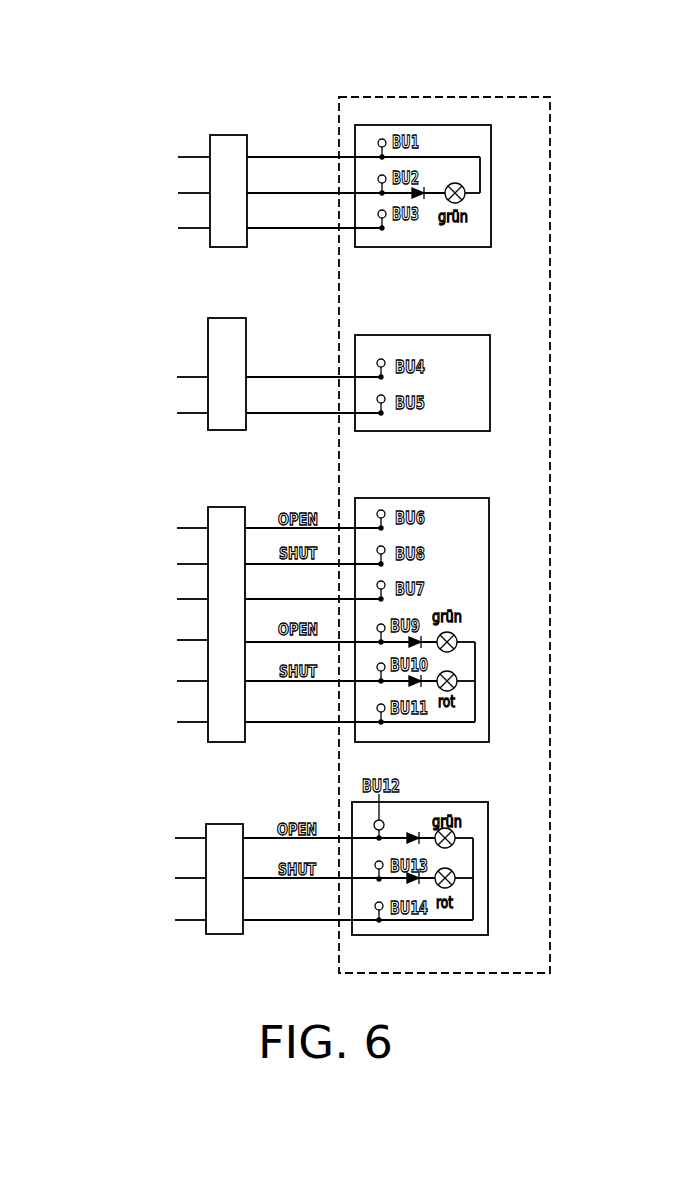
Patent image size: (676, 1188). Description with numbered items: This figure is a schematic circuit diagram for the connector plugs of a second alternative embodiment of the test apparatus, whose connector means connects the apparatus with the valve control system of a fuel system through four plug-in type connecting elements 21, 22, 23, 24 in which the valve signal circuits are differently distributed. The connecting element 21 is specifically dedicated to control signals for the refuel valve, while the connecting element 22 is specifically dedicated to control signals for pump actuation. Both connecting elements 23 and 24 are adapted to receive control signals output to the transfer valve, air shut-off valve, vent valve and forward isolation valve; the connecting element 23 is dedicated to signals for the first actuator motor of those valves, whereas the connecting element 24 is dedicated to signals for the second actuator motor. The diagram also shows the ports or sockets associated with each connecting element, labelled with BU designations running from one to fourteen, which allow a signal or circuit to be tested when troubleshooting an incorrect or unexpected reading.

The connecting element 21 is at (185, 115).
The connecting element 22 is at (175, 340).
The connecting element 23 is at (177, 508).
The connecting element 24 is at (177, 810).